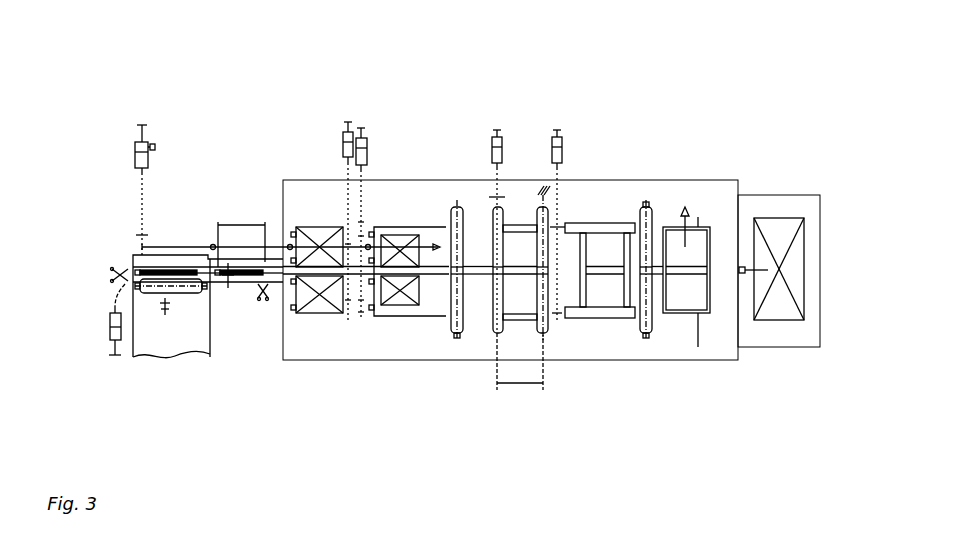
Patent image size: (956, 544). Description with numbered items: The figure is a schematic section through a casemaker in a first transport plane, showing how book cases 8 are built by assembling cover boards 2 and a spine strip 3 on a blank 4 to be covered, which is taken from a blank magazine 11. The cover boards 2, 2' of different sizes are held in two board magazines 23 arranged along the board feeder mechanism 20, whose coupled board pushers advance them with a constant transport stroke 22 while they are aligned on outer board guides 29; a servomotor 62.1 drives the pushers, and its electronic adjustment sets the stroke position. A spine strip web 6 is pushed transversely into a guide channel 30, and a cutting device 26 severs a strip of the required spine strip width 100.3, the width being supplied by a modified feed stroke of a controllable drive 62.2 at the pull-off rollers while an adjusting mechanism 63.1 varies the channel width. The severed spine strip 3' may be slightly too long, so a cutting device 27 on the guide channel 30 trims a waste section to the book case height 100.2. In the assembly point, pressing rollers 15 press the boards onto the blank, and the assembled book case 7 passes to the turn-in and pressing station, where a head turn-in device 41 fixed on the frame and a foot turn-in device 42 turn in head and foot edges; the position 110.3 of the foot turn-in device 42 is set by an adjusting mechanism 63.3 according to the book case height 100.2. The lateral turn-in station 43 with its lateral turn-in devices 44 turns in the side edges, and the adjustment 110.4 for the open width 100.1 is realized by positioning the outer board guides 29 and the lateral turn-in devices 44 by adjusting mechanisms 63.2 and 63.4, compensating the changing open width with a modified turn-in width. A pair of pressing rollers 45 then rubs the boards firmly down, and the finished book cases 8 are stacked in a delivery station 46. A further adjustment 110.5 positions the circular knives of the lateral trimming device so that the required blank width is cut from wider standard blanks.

The cover boards 2 is at (367, 330).
The cover boards of a second size 2' is at (403, 313).
The spine strip 3 is at (249, 166).
The severed spine strip 3' is at (322, 168).
The blank to be covered 4 is at (802, 312).
The spine strip web 6 is at (152, 348).
The assembled book case 7 is at (533, 230).
The book case 8 is at (707, 233).
The blank magazine 11 is at (783, 239).
The pressing rollers 15 is at (457, 207).
The board feeder mechanism 20 is at (392, 362).
The transport stroke 22 is at (186, 267).
The board magazine 23 is at (333, 340).
The cutting device 26 is at (112, 258).
The cutting device 27 is at (269, 314).
The outer board guides 29 is at (435, 209).
The guide channel 30 is at (275, 267).
The head turn-in device 41 is at (621, 223).
The foot turn-in device 42 is at (497, 303).
The lateral turn-in station 43 is at (611, 192).
The lateral turn-in devices 44 is at (617, 225).
The pair of pressing rollers 45 is at (649, 355).
The delivery station 46 is at (684, 193).
The servomotor 62.1 is at (143, 153).
The controllable drive 62.2 is at (110, 328).
The adjusting mechanism 63.1 is at (343, 135).
The adjusting mechanism 63.2 is at (367, 150).
The adjusting mechanism 63.3 is at (492, 138).
The adjusting mechanism 63.4 is at (553, 138).
The open width 100.1 is at (698, 328).
The book case height 100.2 is at (250, 225).
The spine strip width 100.3 is at (238, 289).
The position of foot turn-in device 110.3 is at (490, 195).
The adjustment with respect to open width 110.4 is at (560, 224).
The adjustment of blank width 110.5 is at (557, 320).